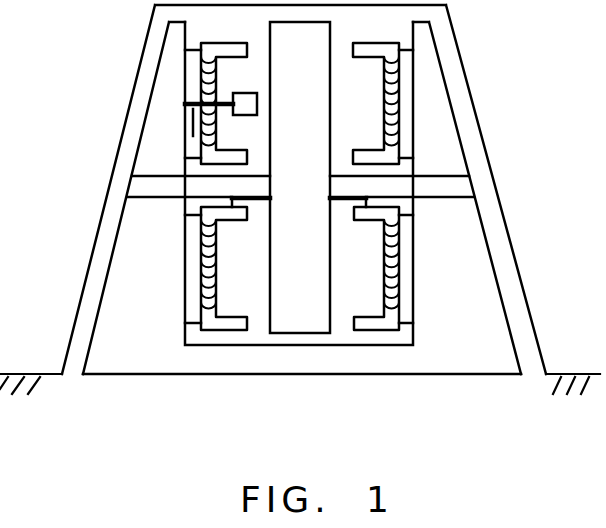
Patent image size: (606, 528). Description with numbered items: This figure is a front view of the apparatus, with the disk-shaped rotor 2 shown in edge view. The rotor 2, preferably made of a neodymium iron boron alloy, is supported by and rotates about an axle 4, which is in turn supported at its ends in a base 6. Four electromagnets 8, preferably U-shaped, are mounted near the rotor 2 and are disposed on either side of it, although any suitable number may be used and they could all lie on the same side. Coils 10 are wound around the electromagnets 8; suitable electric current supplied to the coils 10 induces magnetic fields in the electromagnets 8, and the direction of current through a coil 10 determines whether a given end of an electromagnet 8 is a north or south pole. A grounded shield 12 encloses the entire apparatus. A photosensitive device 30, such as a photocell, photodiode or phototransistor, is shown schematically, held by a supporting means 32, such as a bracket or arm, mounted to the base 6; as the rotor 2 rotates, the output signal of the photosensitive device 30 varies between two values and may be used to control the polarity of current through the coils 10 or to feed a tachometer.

The rotor 2 is at (305, 333).
The axle 4 is at (345, 176).
The base 6 is at (138, 366).
The electromagnet 8 is at (330, 198).
The coil 10 is at (436, 248).
The grounded shield 12 is at (108, 193).
The photosensitive device 30 is at (246, 93).
The supporting means 32 is at (193, 136).